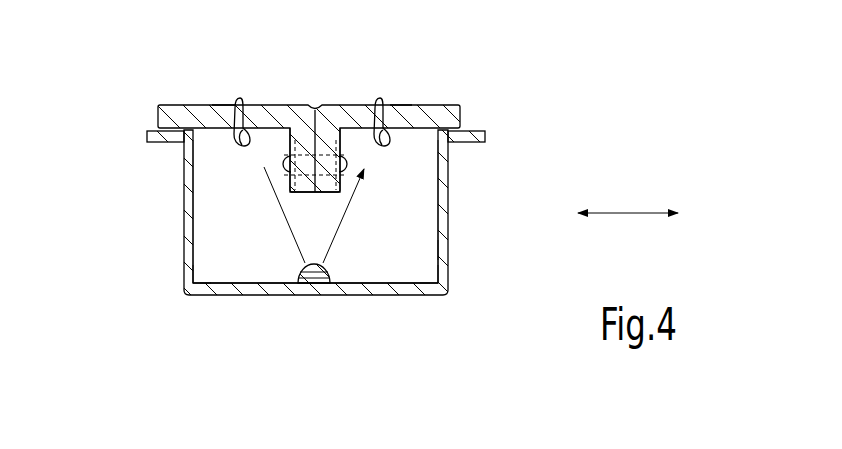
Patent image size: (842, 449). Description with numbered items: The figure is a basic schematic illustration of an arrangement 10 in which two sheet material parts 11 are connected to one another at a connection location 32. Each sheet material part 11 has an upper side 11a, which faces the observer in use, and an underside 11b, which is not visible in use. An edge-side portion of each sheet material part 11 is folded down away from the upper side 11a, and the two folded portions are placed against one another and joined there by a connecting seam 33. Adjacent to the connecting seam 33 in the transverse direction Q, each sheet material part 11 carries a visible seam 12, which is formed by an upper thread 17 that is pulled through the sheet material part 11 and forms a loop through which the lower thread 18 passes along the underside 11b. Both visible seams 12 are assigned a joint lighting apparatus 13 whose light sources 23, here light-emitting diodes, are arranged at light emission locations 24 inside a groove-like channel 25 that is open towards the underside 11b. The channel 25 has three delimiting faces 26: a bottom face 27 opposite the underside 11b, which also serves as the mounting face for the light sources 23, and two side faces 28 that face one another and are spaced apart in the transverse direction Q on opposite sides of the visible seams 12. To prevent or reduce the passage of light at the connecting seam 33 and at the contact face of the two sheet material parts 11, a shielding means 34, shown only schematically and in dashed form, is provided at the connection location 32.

The arrangement 10 is at (586, 74).
The sheet material part 11 is at (157, 120).
The upper side 11a is at (172, 101).
The underside 11b is at (183, 163).
The visible seam 12 is at (228, 88).
The lighting apparatus 13 is at (234, 246).
The upper thread 17 is at (245, 98).
The lower thread 18 is at (247, 148).
The light source 23 is at (310, 284).
The light emission location 24 is at (288, 266).
The channel 25 is at (448, 172).
The delimiting face 26 is at (383, 316).
The bottom face 27 is at (424, 277).
The side face 28 is at (200, 261).
The connection location 32 is at (316, 90).
The connecting seam 33 is at (283, 192).
The shielding means 34 is at (342, 188).
The transverse direction Q is at (620, 212).